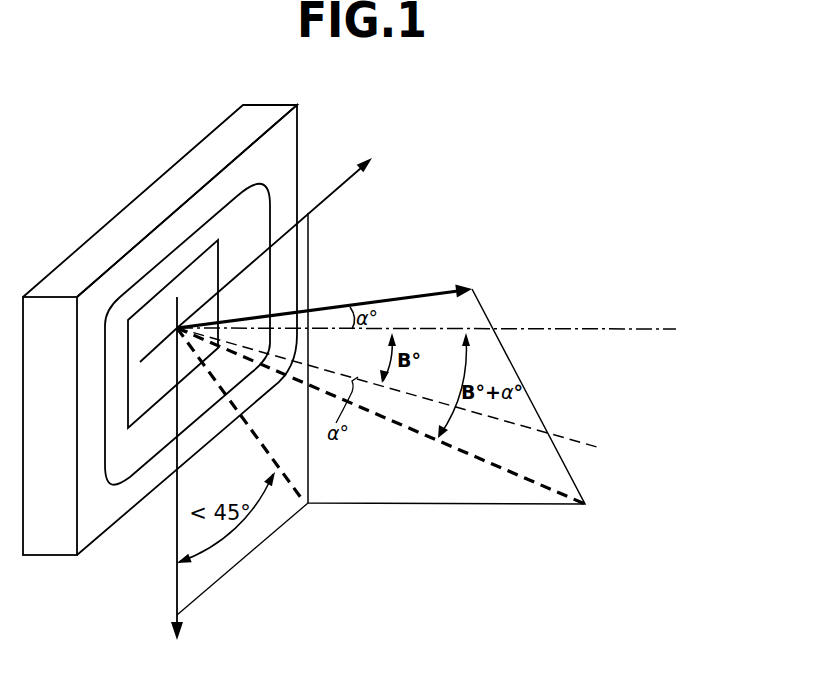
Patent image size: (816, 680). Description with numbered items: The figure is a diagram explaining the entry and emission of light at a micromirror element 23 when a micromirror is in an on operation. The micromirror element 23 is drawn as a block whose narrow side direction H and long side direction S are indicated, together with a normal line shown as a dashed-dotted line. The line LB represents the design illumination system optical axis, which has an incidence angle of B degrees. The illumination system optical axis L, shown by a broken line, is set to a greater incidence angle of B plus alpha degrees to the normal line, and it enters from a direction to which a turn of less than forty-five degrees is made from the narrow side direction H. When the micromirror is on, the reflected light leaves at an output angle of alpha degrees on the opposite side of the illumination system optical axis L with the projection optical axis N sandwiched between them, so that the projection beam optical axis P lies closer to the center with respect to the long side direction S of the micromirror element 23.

The micromirror element 23 is at (191, 167).
The narrow side direction H is at (237, 484).
The long side direction S is at (285, 234).
The projection optical axis N is at (438, 330).
The projection beam optical axis P is at (421, 294).
The illumination system optical axis L is at (410, 430).
The design illumination system optical axis LB is at (577, 438).